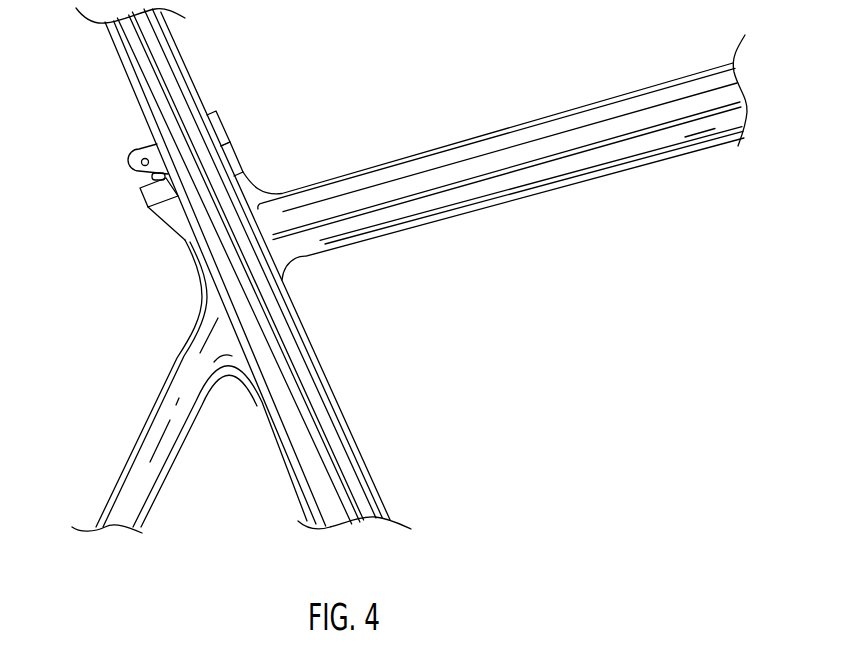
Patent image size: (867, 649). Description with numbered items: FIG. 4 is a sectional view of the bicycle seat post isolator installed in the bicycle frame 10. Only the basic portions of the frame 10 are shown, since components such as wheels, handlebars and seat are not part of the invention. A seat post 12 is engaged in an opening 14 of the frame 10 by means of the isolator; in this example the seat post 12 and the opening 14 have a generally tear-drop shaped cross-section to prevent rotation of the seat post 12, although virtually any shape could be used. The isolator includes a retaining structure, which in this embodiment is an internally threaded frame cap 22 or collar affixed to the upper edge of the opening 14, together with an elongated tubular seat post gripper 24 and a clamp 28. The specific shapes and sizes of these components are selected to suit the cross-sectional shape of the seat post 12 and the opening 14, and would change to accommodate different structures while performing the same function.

The bicycle frame 10 is at (515, 127).
The seat post 12 is at (181, 56).
The opening 14 is at (160, 177).
The frame cap 22 is at (236, 152).
The seat post gripper 24 is at (338, 403).
The clamp 28 is at (139, 152).